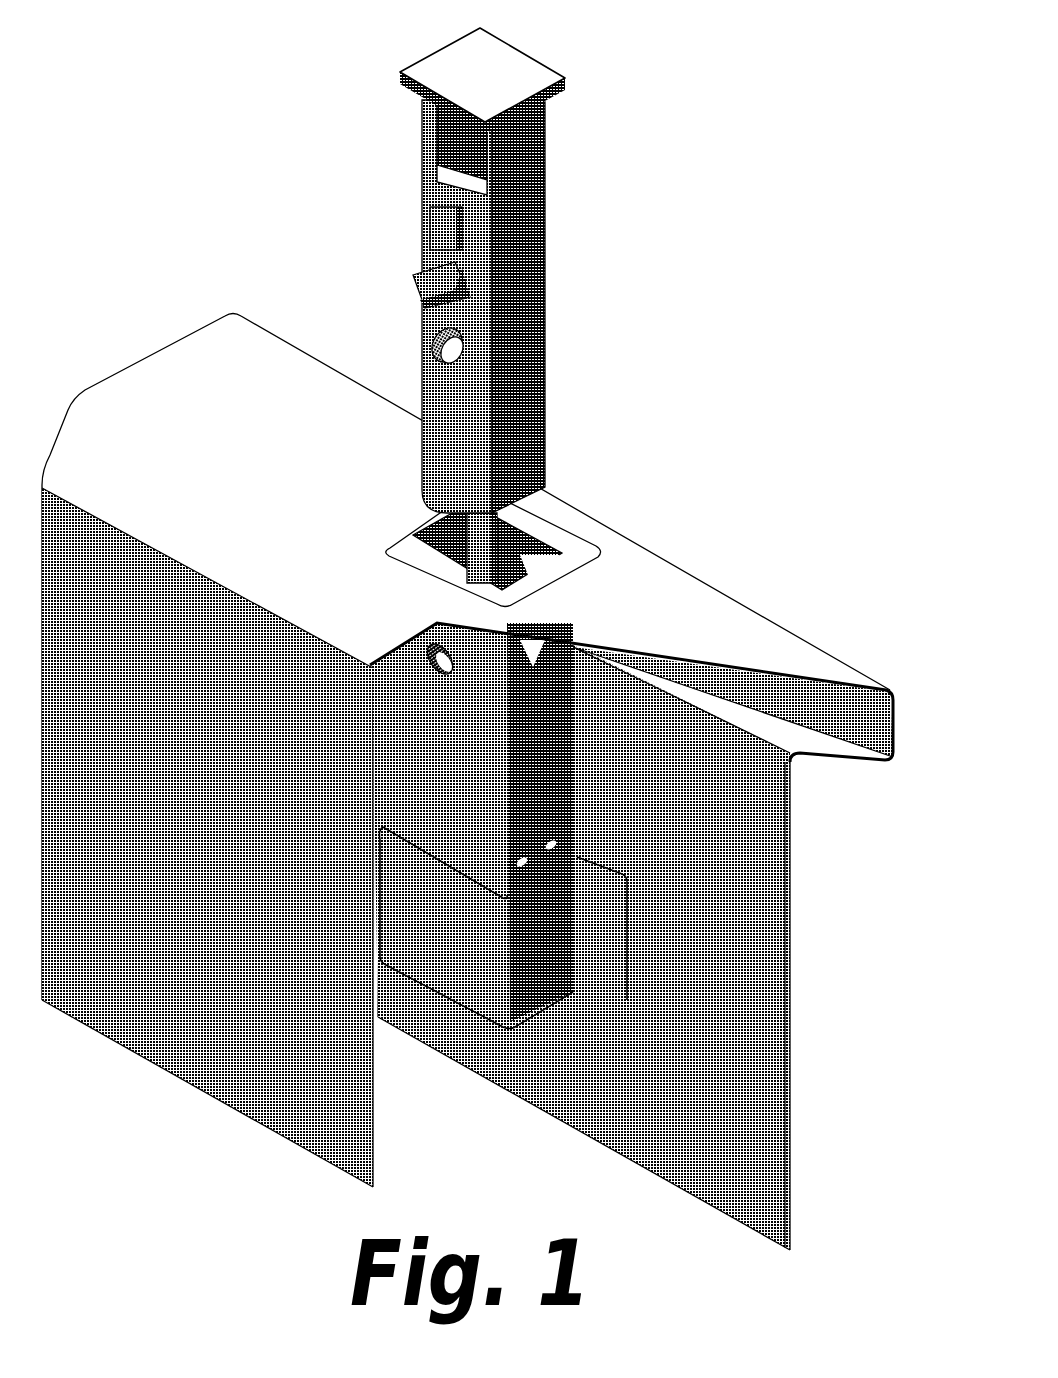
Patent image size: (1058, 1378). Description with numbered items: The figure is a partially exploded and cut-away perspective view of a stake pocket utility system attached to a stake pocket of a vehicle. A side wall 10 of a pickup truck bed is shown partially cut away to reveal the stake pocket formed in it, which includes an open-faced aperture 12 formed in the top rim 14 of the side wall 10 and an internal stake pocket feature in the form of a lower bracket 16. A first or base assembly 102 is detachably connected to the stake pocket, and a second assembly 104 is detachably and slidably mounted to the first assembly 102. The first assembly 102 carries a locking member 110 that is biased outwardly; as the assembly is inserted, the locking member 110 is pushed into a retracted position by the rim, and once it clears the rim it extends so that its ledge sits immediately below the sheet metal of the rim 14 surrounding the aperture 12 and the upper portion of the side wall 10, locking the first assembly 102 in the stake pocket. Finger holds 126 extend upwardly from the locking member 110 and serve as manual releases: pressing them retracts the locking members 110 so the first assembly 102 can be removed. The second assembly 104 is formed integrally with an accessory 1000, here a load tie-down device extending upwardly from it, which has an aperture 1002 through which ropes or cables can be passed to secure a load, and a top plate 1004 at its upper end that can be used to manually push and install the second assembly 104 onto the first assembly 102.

The side wall 10 is at (677, 1073).
The top rim 14 is at (293, 453).
The aperture 12 is at (537, 528).
The finger holds 126 is at (558, 575).
The locking member 110 is at (560, 642).
The first assembly 102 is at (575, 792).
The lower bracket 16 is at (603, 970).
The second assembly 104 is at (578, 267).
The accessory 1000 is at (498, 291).
The aperture 1002 is at (437, 127).
The top plate 1004 is at (483, 70).